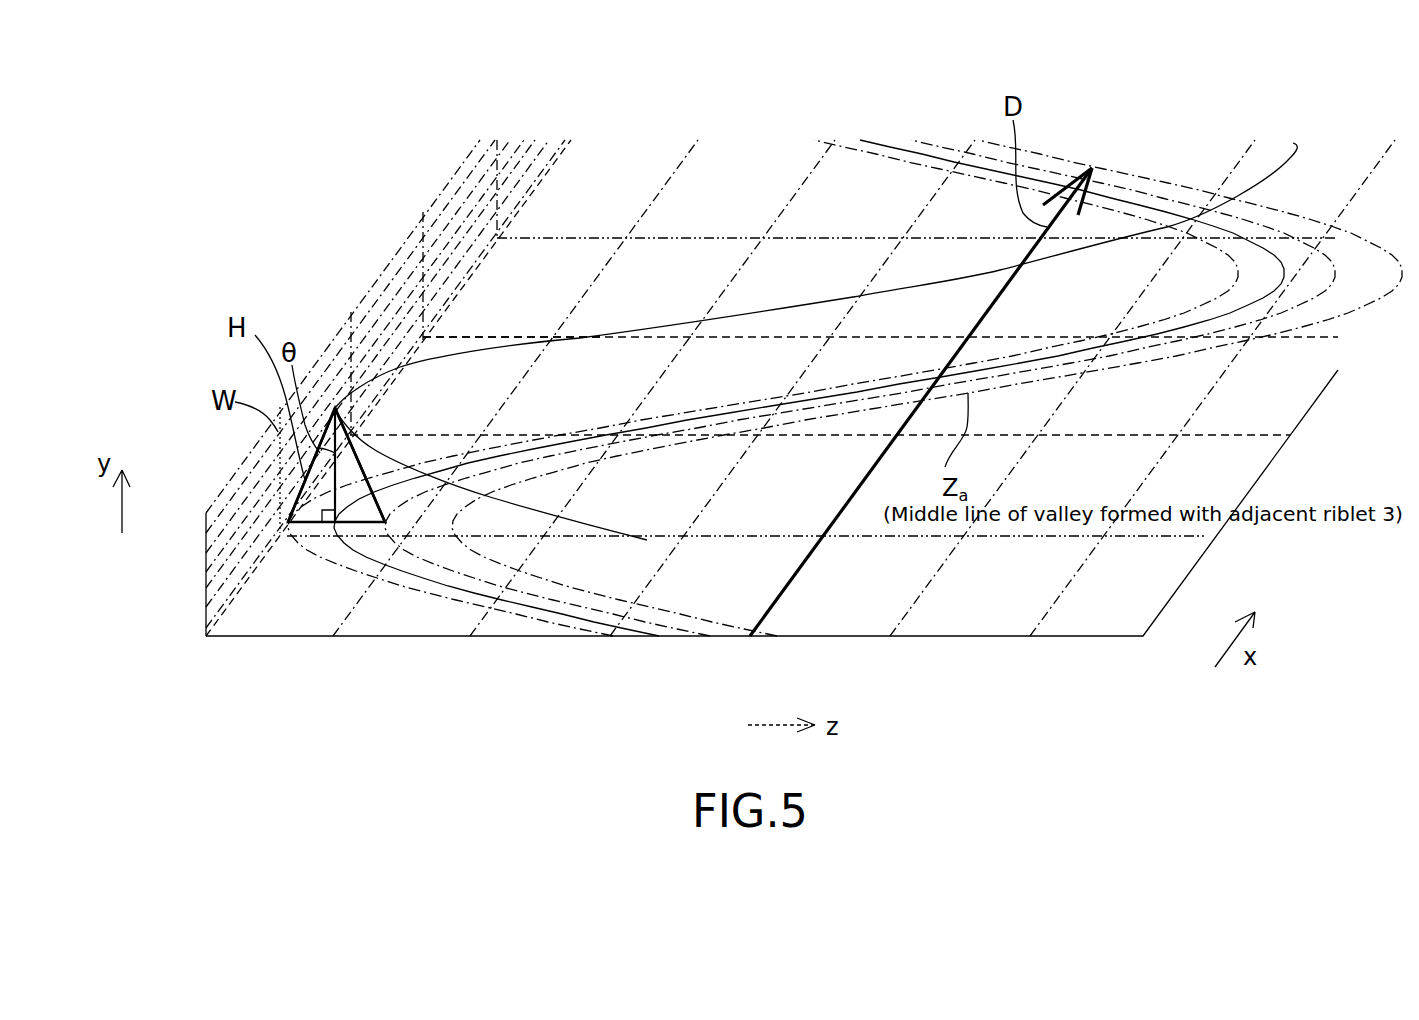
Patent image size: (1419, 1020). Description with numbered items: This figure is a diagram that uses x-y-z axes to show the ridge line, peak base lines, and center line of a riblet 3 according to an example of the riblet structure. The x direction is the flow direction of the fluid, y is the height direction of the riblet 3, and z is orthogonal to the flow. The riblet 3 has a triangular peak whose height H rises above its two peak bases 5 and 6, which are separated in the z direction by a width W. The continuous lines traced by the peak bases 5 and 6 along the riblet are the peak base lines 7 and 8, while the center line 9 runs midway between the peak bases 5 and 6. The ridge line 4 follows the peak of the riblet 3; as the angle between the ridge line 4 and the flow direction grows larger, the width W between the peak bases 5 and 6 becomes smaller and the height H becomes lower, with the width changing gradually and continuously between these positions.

The riblet 3 is at (430, 357).
The ridge line 4 is at (410, 363).
The peak base 5 is at (327, 560).
The peak base 6 is at (387, 527).
The peak base line 7 is at (317, 553).
The peak base line 8 is at (448, 545).
The center line 9 is at (338, 410).